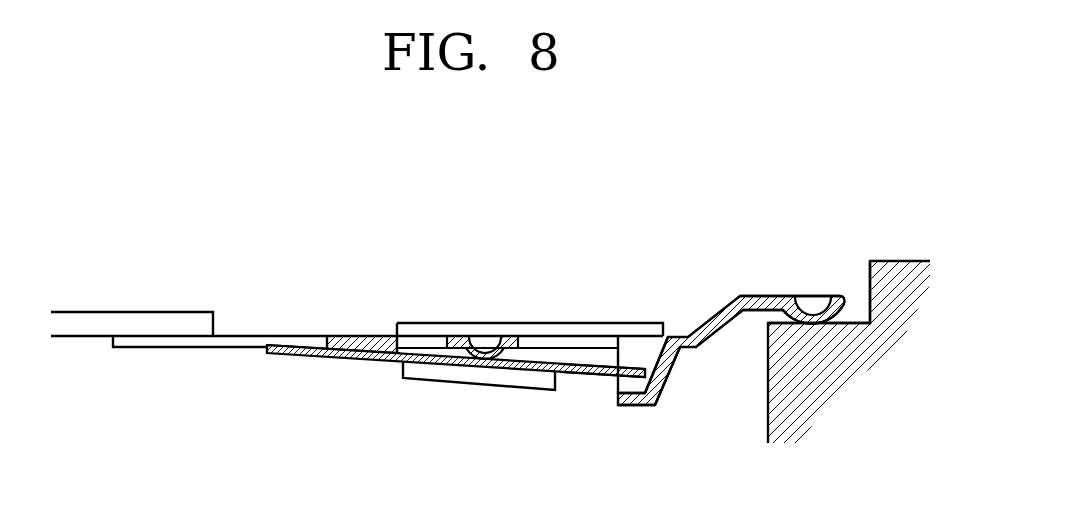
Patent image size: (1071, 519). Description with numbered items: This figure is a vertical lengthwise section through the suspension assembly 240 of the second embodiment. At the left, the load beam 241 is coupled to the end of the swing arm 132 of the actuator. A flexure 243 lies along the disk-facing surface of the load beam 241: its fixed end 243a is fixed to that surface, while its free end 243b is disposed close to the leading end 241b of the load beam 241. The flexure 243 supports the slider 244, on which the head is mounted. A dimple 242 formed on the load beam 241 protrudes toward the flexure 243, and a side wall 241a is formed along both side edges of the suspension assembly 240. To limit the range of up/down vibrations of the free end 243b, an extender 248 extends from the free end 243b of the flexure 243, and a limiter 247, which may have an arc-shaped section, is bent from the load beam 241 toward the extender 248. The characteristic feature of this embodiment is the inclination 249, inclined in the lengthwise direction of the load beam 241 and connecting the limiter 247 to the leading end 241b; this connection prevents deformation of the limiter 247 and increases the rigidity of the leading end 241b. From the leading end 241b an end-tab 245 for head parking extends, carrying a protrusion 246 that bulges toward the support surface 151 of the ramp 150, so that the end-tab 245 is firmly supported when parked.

The swing arm 132 is at (128, 322).
The suspension assembly 240 is at (400, 285).
The load beam 241 is at (335, 336).
The side wall 241a is at (572, 330).
The leading end of the load beam 241b is at (685, 337).
The dimple 242 is at (487, 347).
The flexure 243 is at (430, 366).
The fixed end of the flexure 243a is at (315, 356).
The free end of the flexure 243b is at (587, 378).
The slider 244 is at (477, 378).
The end-tab 245 is at (763, 296).
The protrusion 246 is at (813, 296).
The limiter 247 is at (637, 406).
The extender 248 is at (664, 387).
The inclination 249 is at (672, 365).
The ramp 150 is at (845, 345).
The support surface 151 is at (858, 322).